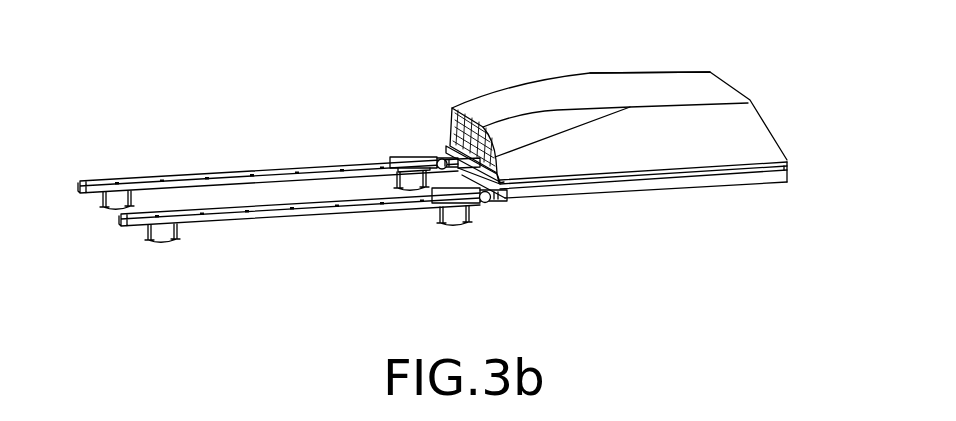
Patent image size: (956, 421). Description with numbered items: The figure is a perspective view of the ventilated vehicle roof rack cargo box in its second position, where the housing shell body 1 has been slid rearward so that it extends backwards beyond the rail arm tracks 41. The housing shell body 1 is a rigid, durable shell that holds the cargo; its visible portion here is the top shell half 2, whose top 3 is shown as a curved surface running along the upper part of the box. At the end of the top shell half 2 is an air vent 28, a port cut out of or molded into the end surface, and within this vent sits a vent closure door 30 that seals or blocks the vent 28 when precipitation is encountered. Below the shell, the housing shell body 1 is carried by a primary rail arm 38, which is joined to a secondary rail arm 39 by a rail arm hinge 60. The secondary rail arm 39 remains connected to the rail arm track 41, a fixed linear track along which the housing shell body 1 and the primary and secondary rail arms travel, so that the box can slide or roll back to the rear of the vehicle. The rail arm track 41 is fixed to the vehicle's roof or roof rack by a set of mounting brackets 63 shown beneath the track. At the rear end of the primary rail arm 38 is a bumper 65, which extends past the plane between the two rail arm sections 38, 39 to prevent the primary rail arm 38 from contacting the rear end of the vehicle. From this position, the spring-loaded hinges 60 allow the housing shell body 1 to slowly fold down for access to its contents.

The housing shell body 1 is at (508, 67).
The top shell half 2 is at (752, 101).
The top 3 is at (710, 90).
The air vent 28 is at (451, 110).
The vent closure door 30 is at (455, 122).
The primary rail arm 38 is at (695, 188).
The secondary rail arm 39 is at (442, 197).
The rail arm track 41 is at (90, 180).
The rail arm hinge 60 is at (491, 200).
The mounting bracket 63 is at (142, 238).
The bumper 65 is at (790, 183).